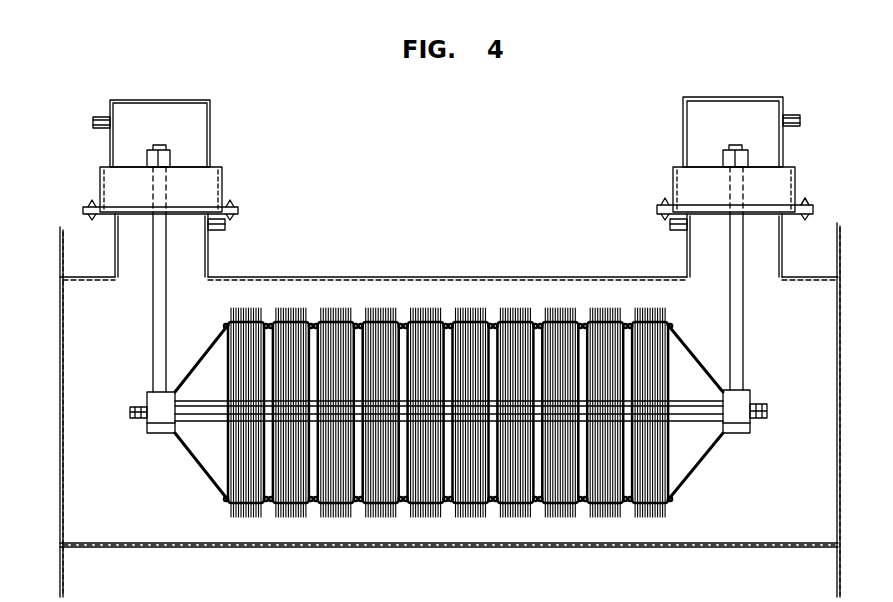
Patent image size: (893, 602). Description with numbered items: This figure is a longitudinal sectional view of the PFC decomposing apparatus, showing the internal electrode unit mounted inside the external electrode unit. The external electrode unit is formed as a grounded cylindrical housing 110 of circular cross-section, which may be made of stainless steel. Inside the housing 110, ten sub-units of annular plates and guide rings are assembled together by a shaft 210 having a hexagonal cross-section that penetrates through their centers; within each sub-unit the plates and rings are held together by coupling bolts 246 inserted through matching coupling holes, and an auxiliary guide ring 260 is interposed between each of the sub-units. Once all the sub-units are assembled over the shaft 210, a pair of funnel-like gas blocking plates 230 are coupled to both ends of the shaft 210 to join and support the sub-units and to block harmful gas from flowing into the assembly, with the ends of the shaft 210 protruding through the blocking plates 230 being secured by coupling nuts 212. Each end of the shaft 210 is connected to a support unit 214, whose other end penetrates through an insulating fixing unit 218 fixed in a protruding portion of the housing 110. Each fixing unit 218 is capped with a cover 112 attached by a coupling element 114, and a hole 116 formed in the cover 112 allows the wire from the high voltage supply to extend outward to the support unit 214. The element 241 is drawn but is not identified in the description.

The cylindrical housing 110 is at (455, 276).
The cover 112 is at (212, 122).
The coupling element 114 is at (805, 201).
The hole 116 is at (93, 123).
The shaft 210 is at (193, 415).
The coupling nut 212 is at (137, 416).
The support unit 214 is at (160, 252).
The insulating fixing unit 218 is at (200, 192).
The gas blocking plate 230 is at (222, 487).
The hollow fiber membrane 241 is at (360, 460).
The coupling bolt 246 is at (316, 507).
The auxiliary guide ring 260 is at (266, 425).